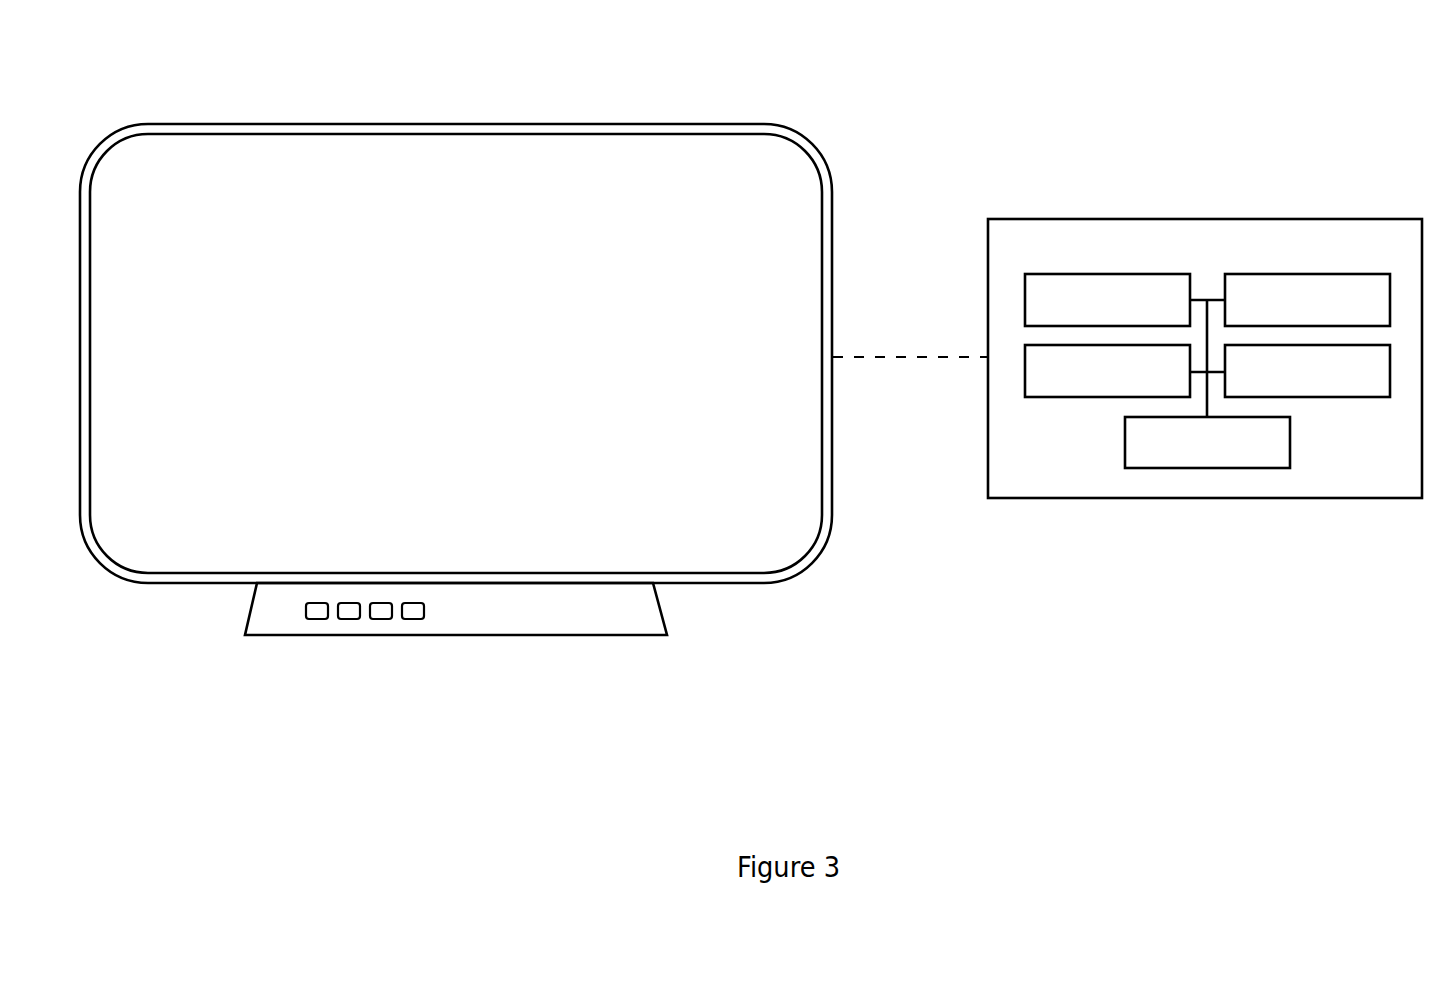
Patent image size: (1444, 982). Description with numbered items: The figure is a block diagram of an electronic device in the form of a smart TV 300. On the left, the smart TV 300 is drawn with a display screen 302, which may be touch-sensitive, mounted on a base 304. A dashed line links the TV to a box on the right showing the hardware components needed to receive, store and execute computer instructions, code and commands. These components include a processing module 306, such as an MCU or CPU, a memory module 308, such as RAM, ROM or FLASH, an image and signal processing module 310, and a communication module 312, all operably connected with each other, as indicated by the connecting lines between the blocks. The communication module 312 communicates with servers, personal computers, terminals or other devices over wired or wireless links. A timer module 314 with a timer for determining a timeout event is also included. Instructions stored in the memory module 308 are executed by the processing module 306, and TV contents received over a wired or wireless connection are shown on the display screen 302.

The smart TV 300 is at (246, 98).
The display screen 302 is at (698, 177).
The base 304 is at (622, 612).
The processing module 306 is at (1107, 300).
The memory module 308 is at (1307, 300).
The image and signal processing module 310 is at (1107, 371).
The communication module 312 is at (1307, 371).
The timer module 314 is at (1207, 442).